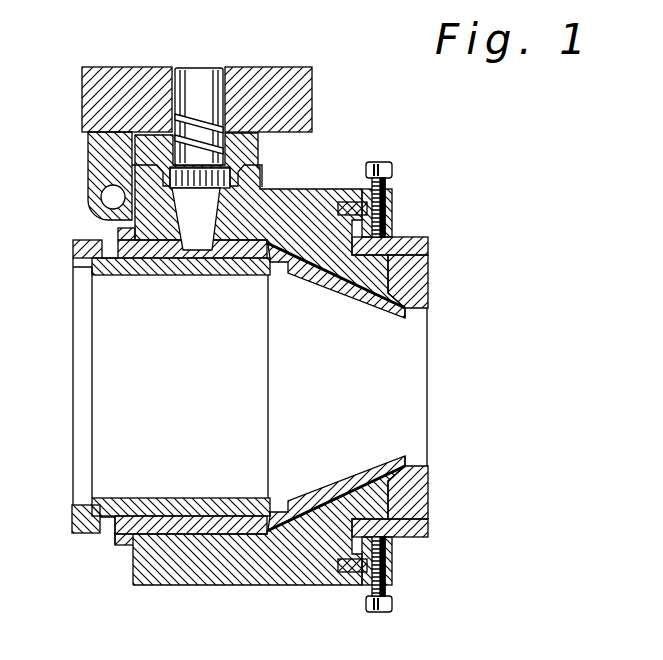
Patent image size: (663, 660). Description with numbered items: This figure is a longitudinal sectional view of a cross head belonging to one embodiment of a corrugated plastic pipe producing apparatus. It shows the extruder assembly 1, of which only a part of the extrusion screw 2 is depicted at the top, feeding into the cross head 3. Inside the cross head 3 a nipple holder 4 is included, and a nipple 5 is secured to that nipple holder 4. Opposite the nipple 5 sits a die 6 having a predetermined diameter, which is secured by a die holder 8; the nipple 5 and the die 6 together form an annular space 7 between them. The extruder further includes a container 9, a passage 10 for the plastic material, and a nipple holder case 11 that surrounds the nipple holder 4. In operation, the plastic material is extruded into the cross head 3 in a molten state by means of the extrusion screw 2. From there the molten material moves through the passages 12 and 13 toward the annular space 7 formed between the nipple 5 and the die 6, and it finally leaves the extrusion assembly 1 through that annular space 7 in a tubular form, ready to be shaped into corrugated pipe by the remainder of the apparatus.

The extruder assembly 1 is at (182, 408).
The extrusion screw 2 is at (199, 116).
The cross head 3 is at (312, 203).
The nipple holder 4 is at (73, 257).
The nipple 5 is at (358, 302).
The die 6 is at (430, 295).
The annular space 7 is at (430, 311).
The die holder 8 is at (430, 250).
The container 9 is at (290, 78).
The passage 10 is at (223, 67).
The nipple holder case 11 is at (118, 233).
The passage 12 is at (197, 207).
The passage 13 is at (313, 268).